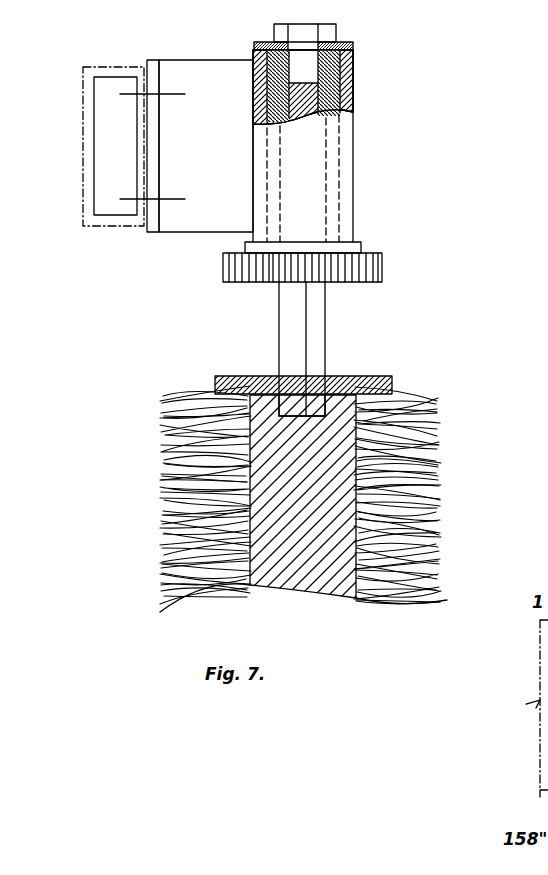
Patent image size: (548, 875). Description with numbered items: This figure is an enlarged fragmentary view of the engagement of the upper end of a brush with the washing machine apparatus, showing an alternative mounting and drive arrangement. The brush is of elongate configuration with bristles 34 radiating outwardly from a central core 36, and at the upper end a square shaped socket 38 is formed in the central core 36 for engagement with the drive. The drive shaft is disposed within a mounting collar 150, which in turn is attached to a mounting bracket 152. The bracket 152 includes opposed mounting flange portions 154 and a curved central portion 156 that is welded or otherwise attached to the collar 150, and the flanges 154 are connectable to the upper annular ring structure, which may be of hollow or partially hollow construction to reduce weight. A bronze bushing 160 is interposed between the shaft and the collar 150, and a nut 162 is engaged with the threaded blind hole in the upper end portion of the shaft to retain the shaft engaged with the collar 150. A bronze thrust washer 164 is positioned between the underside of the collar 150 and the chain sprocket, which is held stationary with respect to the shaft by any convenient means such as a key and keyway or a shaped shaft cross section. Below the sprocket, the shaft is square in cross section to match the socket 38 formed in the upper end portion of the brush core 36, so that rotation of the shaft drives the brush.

The bristles 34 is at (163, 502).
The central core 36 is at (348, 498).
The square shaped socket 38 is at (297, 415).
The mounting collar 150 is at (353, 147).
The mounting bracket 152 is at (117, 83).
The mounting flange portions 154 is at (153, 63).
The curved central portion 156 is at (220, 110).
The bronze bushing 160 is at (340, 78).
The nut 162 is at (328, 25).
The bronze thrust washer 164 is at (358, 247).